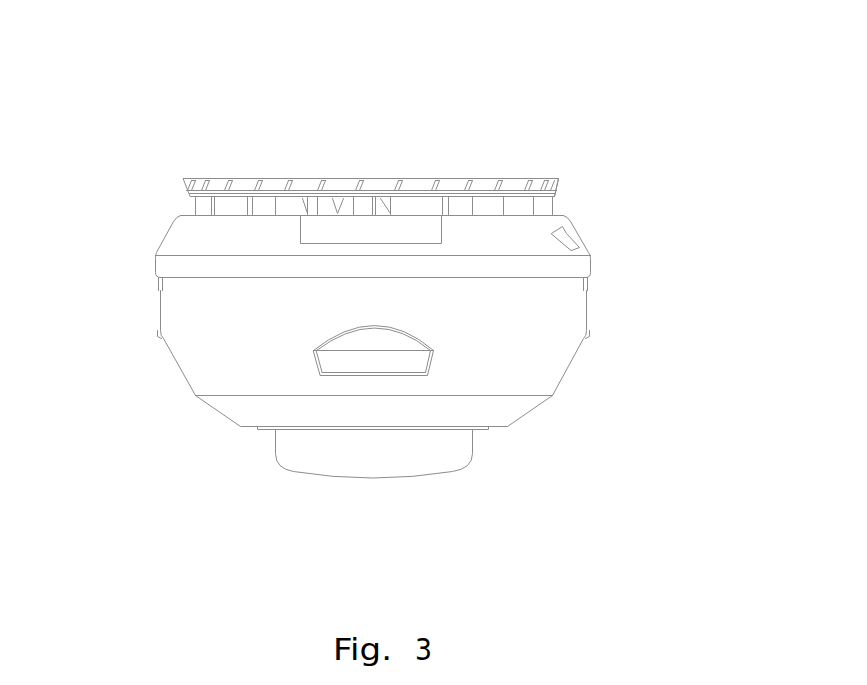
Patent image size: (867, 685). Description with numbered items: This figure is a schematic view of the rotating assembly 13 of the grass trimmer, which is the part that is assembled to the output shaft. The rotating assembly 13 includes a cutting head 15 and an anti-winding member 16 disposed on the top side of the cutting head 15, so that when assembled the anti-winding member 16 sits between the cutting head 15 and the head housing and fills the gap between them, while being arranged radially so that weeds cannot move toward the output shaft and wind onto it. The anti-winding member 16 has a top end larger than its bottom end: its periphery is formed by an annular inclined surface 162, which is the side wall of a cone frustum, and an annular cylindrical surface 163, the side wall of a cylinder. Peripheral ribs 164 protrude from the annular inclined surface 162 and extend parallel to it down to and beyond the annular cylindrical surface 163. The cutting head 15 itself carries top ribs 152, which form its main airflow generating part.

The rotating assembly 13 is at (467, 76).
The cutting head 15 is at (548, 358).
The top ribs 152 is at (221, 214).
The anti-winding member 16 is at (487, 177).
The annular inclined surface 162 is at (537, 183).
The annular cylindrical surface 163 is at (530, 193).
The peripheral ribs 164 is at (561, 190).